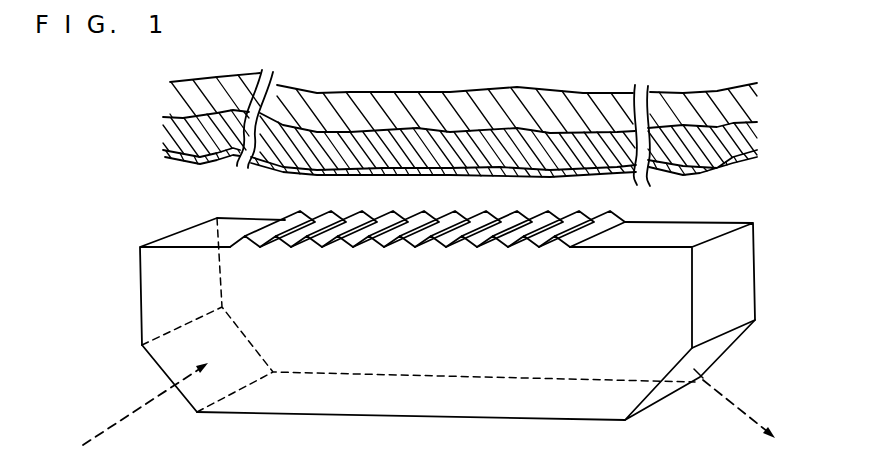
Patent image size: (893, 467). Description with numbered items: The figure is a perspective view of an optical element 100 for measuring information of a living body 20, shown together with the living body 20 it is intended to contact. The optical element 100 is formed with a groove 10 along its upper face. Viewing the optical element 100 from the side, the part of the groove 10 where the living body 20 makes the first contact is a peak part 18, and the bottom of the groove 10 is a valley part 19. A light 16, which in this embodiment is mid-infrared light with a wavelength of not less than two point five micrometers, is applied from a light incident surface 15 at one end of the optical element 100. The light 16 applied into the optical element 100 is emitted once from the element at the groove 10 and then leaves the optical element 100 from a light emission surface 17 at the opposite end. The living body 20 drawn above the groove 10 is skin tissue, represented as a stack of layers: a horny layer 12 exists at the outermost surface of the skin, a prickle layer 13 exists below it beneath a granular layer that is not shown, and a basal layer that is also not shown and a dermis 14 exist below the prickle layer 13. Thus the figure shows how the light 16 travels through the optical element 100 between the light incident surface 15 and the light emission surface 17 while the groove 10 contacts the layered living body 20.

The optical element for measuring information of living body 100 is at (140, 297).
The groove 10 is at (574, 226).
The peak part 18 is at (370, 221).
The valley part 19 is at (287, 246).
The light incident surface 15 is at (186, 405).
The light 16 is at (115, 421).
The light emission surface 17 is at (660, 395).
The living body 20 is at (110, 68).
The horny layer 12 is at (190, 163).
The prickle layer 13 is at (165, 132).
The dermis 14 is at (177, 97).